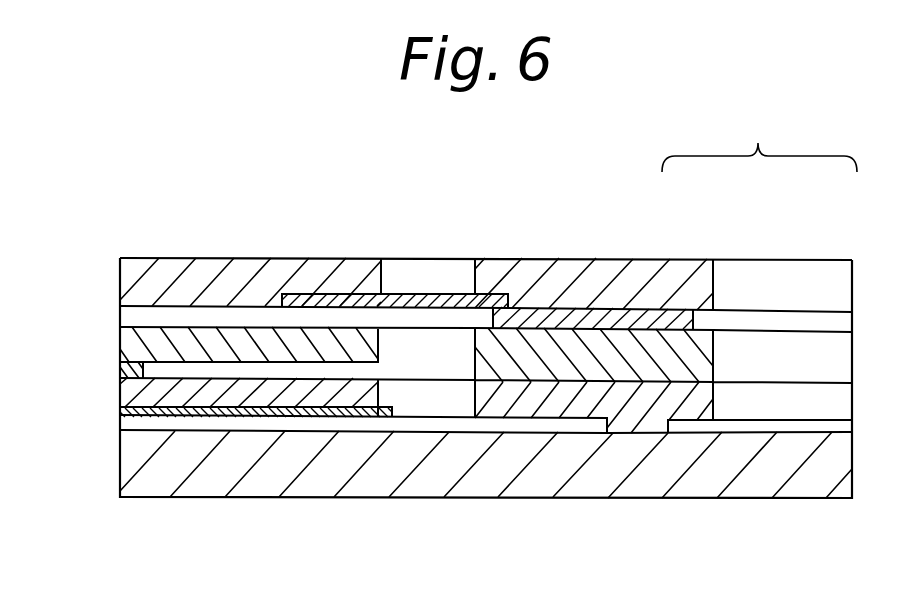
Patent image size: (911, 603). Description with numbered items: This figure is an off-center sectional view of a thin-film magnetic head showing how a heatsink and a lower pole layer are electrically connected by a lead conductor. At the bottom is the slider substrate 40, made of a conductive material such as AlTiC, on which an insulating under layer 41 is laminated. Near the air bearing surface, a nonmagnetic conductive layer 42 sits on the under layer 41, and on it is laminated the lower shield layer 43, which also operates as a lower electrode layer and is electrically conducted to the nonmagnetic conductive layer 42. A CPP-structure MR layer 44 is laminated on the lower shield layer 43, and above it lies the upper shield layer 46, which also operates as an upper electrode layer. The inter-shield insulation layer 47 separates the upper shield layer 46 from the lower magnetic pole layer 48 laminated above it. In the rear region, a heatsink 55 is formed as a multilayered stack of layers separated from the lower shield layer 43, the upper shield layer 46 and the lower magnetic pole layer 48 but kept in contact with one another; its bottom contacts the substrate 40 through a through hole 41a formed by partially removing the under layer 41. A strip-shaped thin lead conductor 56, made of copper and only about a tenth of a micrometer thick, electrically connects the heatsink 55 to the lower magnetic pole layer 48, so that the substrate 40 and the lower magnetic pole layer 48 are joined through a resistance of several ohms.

The slider substrate 40 is at (133, 465).
The under layer 41 is at (128, 425).
The through hole 41a is at (664, 433).
The nonmagnetic conductive layer 42 is at (128, 412).
The lower shield layer 43 is at (130, 398).
The MR layer 44 is at (127, 365).
The upper shield layer 46 is at (132, 348).
The inter-shield insulation layer 47 is at (133, 318).
The lower magnetic pole layer 48 is at (137, 285).
The heatsink 55 is at (759, 137).
The lead conductor 56 is at (413, 297).